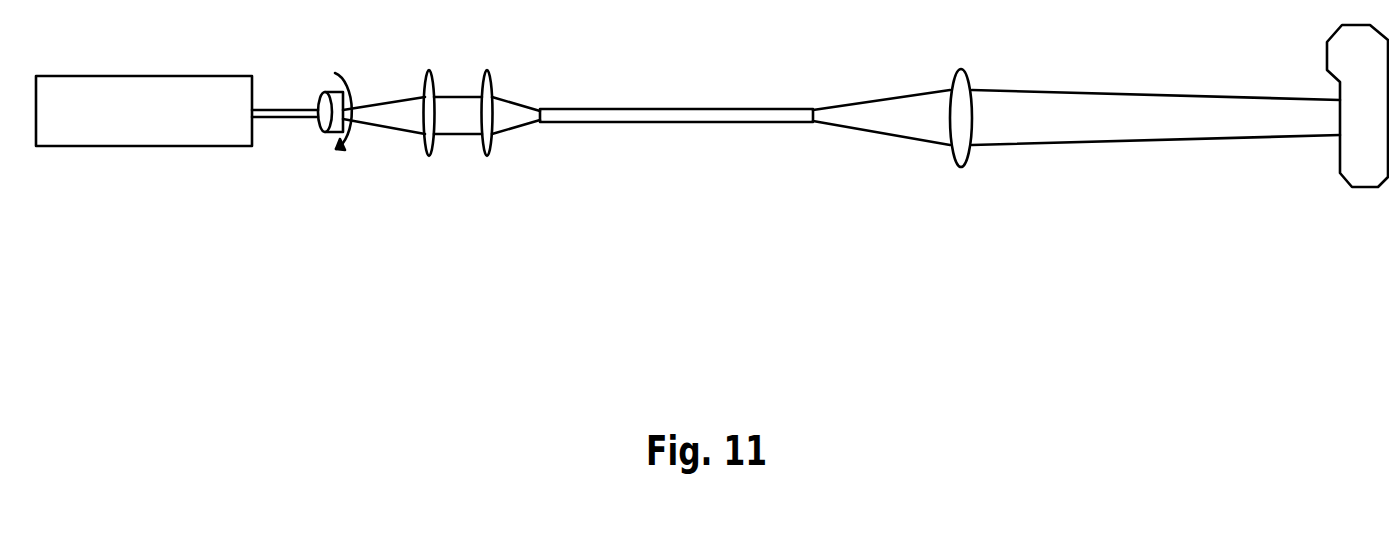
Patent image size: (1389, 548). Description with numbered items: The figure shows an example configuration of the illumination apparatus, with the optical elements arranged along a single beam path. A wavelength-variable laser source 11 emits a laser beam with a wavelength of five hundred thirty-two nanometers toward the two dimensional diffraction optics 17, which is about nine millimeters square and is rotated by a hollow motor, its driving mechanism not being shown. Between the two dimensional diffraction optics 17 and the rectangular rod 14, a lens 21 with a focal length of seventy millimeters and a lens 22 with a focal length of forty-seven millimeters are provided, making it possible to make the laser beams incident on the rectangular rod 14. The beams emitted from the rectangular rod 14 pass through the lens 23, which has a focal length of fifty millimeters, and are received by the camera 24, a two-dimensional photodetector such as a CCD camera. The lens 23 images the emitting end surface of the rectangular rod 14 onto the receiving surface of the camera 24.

The laser source 11 is at (229, 141).
The two dimensional diffraction optics 17 is at (332, 132).
The lens 21 is at (430, 158).
The lens 22 is at (487, 158).
The rectangular rod 14 is at (775, 117).
The lens 23 is at (963, 163).
The camera 24 is at (1367, 187).